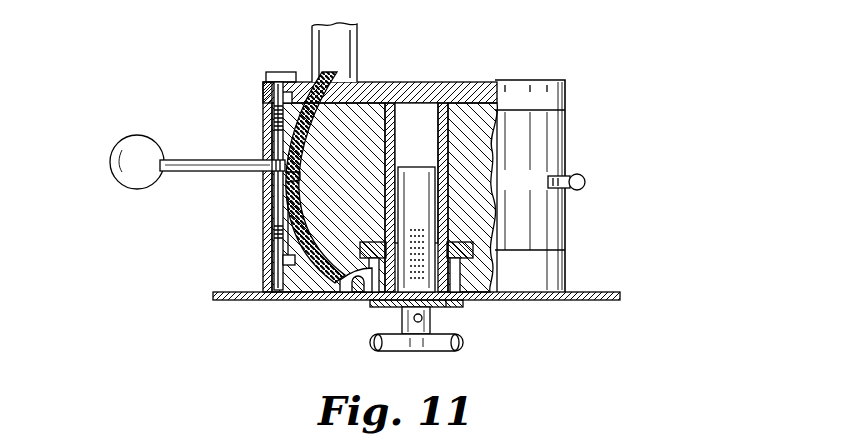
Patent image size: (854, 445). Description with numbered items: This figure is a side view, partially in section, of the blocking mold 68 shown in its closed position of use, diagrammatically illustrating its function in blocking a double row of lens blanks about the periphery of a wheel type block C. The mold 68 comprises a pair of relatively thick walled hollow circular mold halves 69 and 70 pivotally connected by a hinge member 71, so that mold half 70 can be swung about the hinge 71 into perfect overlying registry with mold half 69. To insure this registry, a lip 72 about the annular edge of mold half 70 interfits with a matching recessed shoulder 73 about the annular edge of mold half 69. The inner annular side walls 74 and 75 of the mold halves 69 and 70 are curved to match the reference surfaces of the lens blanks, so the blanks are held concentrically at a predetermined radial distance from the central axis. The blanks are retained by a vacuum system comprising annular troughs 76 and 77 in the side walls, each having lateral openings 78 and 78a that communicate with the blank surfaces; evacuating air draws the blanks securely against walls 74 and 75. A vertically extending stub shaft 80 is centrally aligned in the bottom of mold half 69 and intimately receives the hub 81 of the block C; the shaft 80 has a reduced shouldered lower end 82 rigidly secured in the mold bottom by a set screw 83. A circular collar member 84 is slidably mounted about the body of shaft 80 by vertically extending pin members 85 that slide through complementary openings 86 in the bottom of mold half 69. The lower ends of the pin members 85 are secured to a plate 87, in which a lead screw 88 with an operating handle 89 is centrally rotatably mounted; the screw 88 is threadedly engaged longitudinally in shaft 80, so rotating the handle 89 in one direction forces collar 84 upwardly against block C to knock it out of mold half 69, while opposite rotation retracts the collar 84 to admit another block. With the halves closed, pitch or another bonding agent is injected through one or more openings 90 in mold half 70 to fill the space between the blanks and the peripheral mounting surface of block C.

The wheel type block C is at (370, 97).
The blocking mold 68 is at (575, 105).
The mold half 69 is at (553, 220).
The mold half 70 is at (553, 140).
The hinge member 71 is at (583, 178).
The lip 72 is at (265, 178).
The recessed shoulder 73 is at (272, 200).
The inner annular side wall 74 is at (284, 256).
The inner annular side wall 75 is at (287, 133).
The annular trough 76 is at (286, 290).
The annular trough 77 is at (284, 92).
The lateral openings 78 is at (277, 130).
The lateral openings 78a is at (270, 146).
The stub shaft 80 is at (413, 180).
The hub 81 is at (423, 118).
The reduced shouldered lower end 82 is at (386, 305).
The set screw 83 is at (446, 307).
The circular collar member 84 is at (462, 245).
The pin members 85 is at (392, 293).
The openings 86 is at (362, 262).
The plate 87 is at (402, 312).
The lead screw 88 is at (416, 240).
The operating handle 89 is at (455, 345).
The openings 90 is at (358, 125).